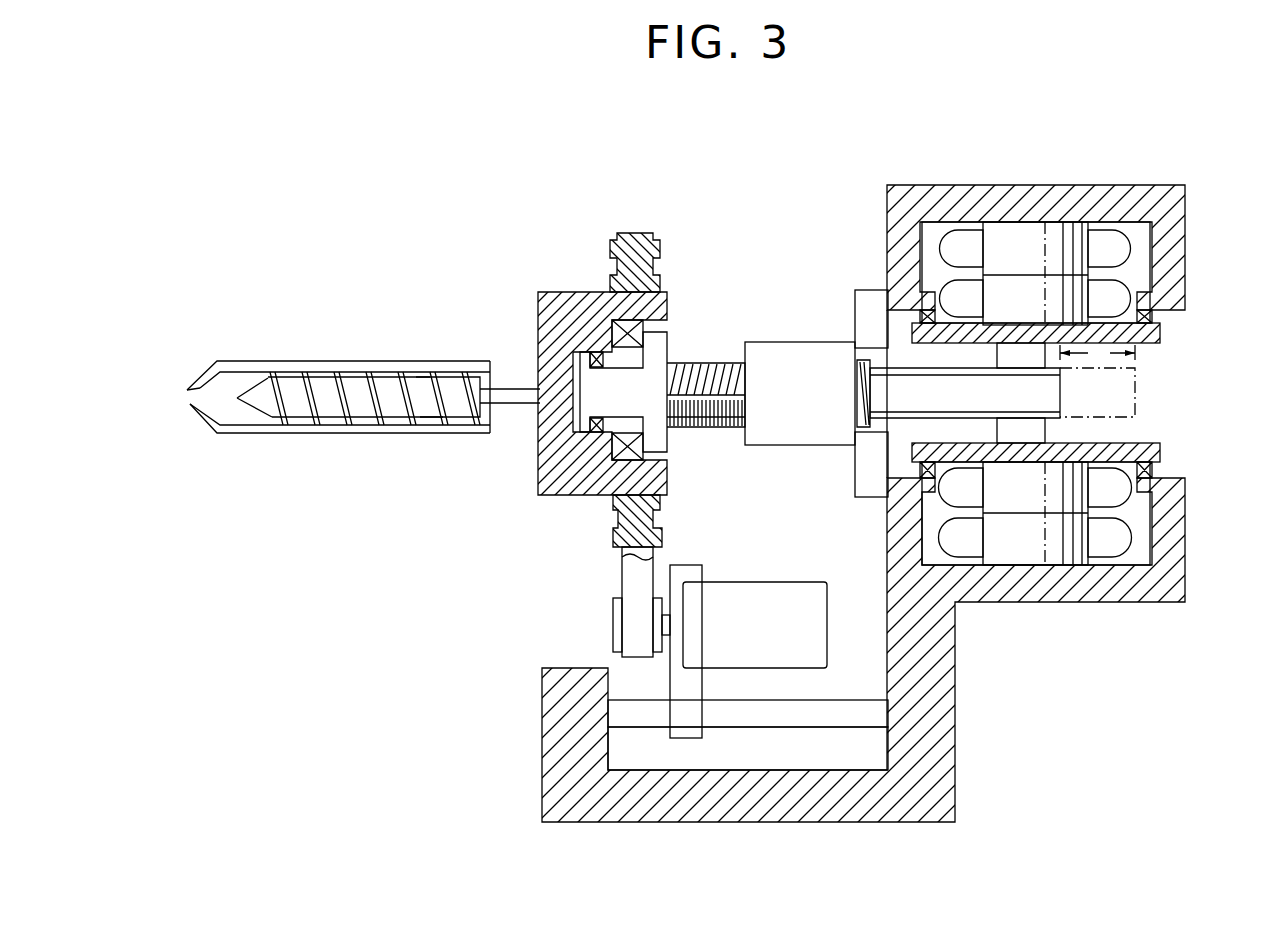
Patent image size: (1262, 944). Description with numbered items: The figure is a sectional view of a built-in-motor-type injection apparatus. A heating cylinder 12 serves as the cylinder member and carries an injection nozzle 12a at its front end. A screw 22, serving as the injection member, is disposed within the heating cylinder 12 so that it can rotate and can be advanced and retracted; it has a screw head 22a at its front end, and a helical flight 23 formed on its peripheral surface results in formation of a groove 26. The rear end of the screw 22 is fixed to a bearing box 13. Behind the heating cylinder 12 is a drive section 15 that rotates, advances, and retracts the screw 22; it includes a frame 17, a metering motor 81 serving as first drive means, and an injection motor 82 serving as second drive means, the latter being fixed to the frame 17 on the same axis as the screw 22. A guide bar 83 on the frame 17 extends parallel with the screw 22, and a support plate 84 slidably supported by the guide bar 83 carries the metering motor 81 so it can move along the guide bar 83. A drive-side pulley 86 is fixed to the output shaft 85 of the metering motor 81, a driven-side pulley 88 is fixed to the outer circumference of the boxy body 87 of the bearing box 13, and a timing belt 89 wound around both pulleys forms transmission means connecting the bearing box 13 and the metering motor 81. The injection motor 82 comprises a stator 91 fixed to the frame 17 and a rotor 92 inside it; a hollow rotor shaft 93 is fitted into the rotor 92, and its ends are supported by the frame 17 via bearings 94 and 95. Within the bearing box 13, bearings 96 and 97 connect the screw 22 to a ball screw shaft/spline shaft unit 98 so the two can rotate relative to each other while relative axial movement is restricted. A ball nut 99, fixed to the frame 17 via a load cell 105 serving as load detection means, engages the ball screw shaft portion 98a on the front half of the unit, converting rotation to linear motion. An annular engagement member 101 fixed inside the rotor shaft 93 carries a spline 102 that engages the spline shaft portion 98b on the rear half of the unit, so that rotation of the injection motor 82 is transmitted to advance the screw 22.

The heating cylinder 12 is at (288, 360).
The injection nozzle 12a is at (186, 392).
The bearing box 13 is at (589, 270).
The drive section 15 is at (824, 218).
The frame 17 is at (955, 698).
The screw 22 is at (356, 402).
The screw head 22a is at (258, 402).
The helical flight 23 is at (405, 410).
The groove 26 is at (420, 375).
The metering motor 81 is at (773, 575).
The injection motor 82 is at (1041, 376).
The guide bar 83 is at (810, 713).
The support plate 84 is at (677, 682).
The output shaft 85 is at (680, 623).
The drive-side pulley 86 is at (613, 623).
The boxy body 87 is at (543, 460).
The driven-side pulley 88 is at (662, 243).
The timing belt 89 is at (635, 587).
The stator 91 is at (1013, 245).
The rotor 92 is at (1040, 295).
The rotor shaft 93 is at (1150, 442).
The bearing 94 is at (922, 305).
The bearing 95 is at (1147, 308).
The bearing 96 is at (598, 352).
The bearing 97 is at (640, 336).
The ball screw shaft/spline shaft unit 98 is at (710, 352).
The ball screw shaft portion 98a is at (716, 432).
The spline shaft portion 98b is at (866, 430).
The ball nut 99 is at (800, 362).
The annular engagement member 101 is at (1018, 428).
The spline 102 is at (1048, 405).
The load cell 105 is at (864, 317).